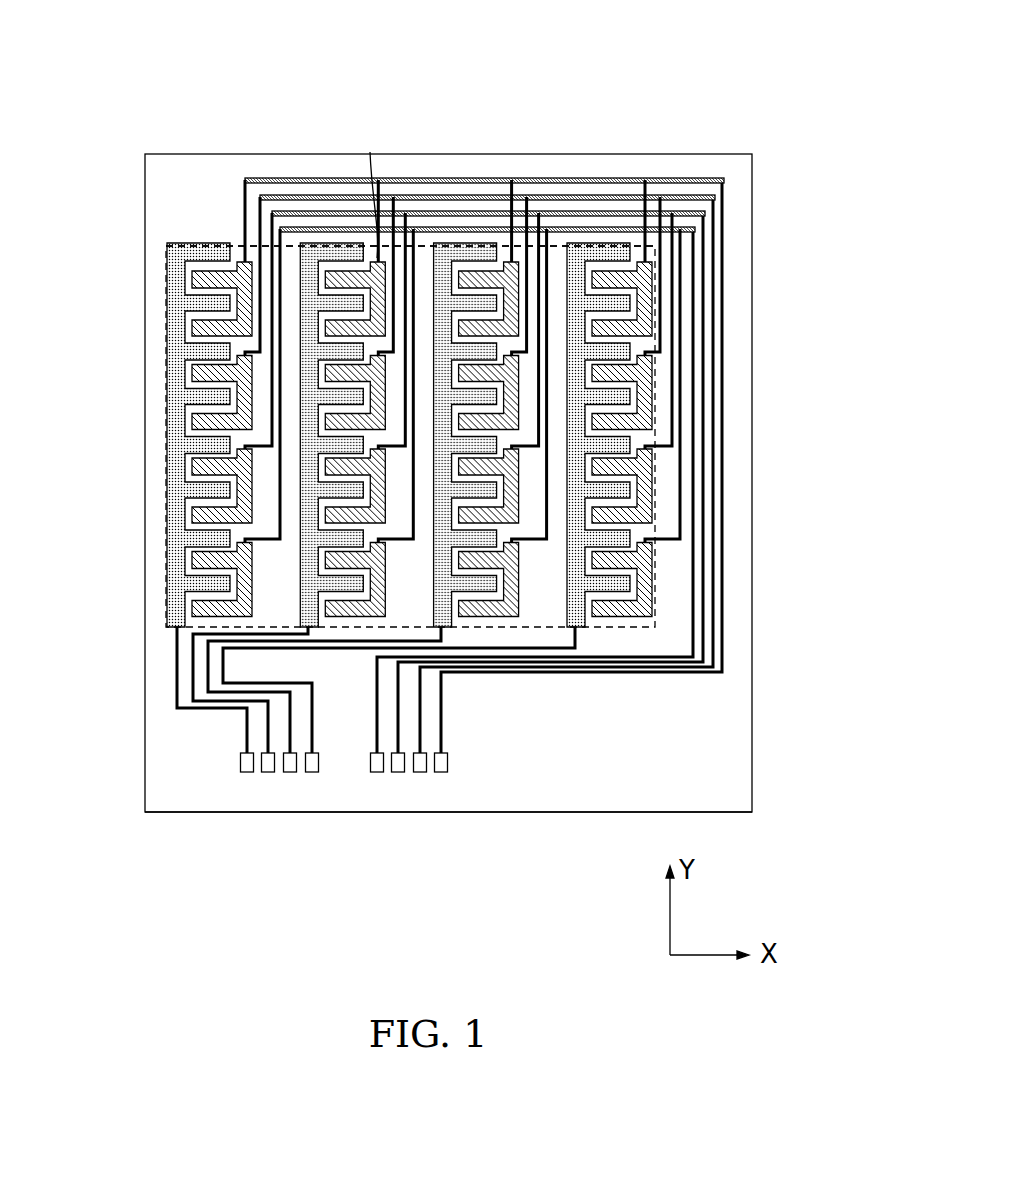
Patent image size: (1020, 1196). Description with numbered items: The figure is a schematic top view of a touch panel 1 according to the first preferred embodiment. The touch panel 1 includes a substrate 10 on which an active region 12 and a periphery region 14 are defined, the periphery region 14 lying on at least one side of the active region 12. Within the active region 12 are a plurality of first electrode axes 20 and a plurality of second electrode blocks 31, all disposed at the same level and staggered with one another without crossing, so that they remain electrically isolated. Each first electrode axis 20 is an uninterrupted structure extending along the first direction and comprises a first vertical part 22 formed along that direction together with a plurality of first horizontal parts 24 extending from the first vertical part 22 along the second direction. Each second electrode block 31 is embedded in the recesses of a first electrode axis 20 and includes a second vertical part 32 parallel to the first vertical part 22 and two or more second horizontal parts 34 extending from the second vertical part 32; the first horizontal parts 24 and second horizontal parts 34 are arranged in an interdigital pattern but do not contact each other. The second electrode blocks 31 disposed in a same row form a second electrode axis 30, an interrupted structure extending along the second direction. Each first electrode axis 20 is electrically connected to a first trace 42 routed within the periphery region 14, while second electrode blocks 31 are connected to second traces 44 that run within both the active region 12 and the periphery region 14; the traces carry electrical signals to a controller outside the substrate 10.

The touch panel 1 is at (155, 76).
The substrate 10 is at (746, 154).
The active region 12 is at (638, 630).
The periphery region 14 is at (715, 770).
The first electrode axis 20 is at (100, 205).
The first vertical part 22 is at (180, 283).
The first horizontal part 24 is at (210, 242).
The second electrode axis 30 is at (707, 88).
The second electrode block 31 is at (256, 268).
The second vertical part 32 is at (175, 392).
The second horizontal part 34 is at (185, 433).
The first trace 42 is at (193, 672).
The second trace 44 is at (725, 265).